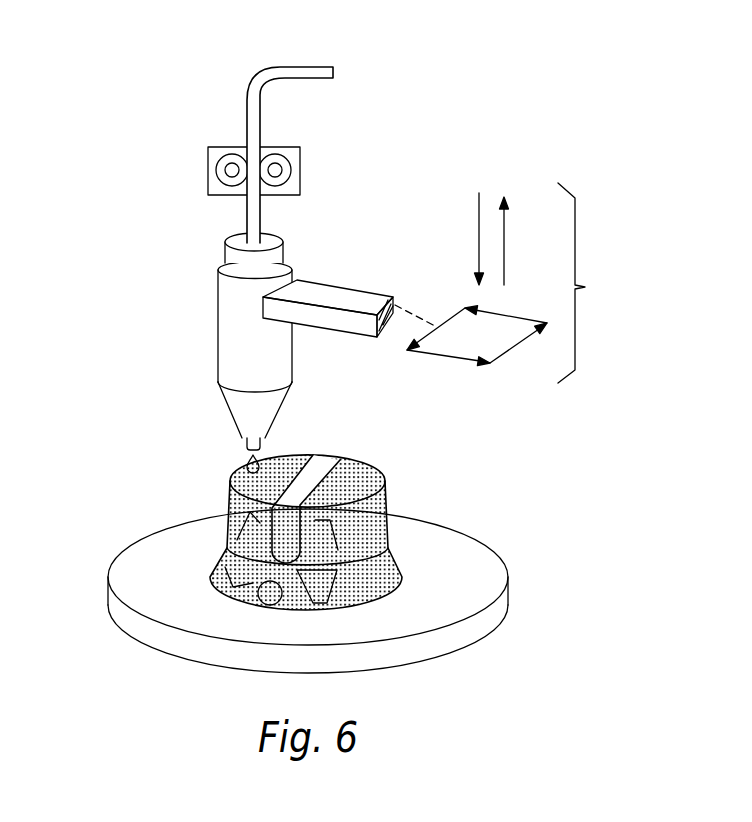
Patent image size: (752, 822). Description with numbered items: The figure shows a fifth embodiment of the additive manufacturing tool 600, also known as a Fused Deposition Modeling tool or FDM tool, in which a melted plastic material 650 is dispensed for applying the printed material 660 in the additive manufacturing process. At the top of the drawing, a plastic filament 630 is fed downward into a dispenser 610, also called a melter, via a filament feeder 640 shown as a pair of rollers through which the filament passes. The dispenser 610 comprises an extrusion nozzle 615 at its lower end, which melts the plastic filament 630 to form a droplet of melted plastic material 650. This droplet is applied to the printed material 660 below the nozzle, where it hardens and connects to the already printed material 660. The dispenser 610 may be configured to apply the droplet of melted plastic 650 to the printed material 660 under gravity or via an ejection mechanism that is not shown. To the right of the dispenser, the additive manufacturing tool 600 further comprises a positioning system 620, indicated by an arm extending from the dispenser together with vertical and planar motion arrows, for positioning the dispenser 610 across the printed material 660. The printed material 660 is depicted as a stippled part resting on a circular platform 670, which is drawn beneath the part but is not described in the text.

The additive manufacturing tool 600 is at (510, 80).
The dispenser 610 is at (232, 328).
The extrusion nozzle 615 is at (245, 441).
The positioning system 620 is at (447, 283).
The plastic filament 630 is at (260, 92).
The filament feeder 640 is at (215, 162).
The melted plastic material 650 is at (240, 464).
The printed material 660 is at (377, 530).
The build platform 670 is at (132, 556).